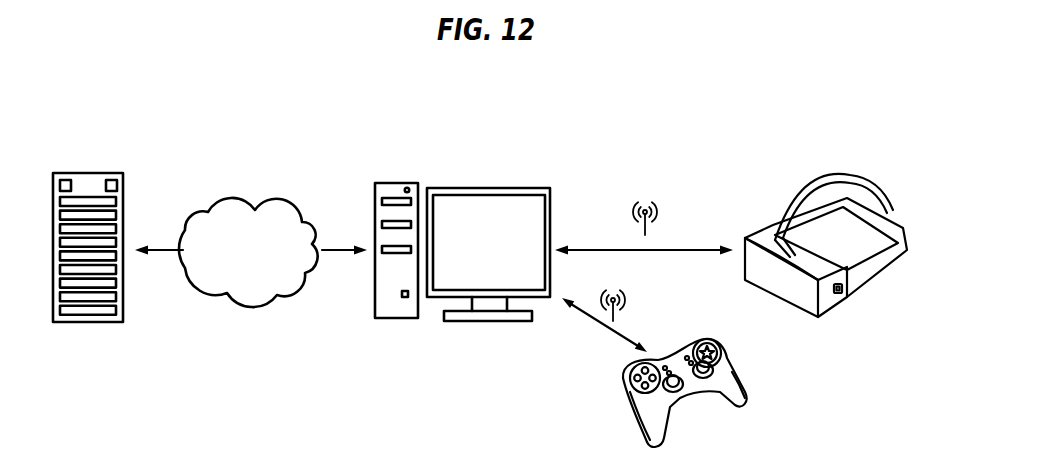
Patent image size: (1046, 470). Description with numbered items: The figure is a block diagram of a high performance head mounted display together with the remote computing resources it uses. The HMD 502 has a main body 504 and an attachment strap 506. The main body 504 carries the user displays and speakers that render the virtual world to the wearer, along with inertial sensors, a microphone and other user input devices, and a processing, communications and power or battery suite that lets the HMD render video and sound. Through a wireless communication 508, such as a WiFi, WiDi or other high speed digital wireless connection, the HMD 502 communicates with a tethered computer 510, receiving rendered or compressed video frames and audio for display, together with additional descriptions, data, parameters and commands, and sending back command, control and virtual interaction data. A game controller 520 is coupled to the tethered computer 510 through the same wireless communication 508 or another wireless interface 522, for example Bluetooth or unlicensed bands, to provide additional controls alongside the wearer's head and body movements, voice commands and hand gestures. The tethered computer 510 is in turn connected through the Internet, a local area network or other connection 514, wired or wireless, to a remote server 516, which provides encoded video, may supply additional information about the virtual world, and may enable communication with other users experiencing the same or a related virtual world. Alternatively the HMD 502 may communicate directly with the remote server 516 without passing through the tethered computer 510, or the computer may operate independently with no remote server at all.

The HMD 502 is at (843, 271).
The main body 504 is at (767, 287).
The attachment strap 506 is at (883, 205).
The wireless communication 508 is at (697, 248).
The tethered computer 510 is at (520, 170).
The connection 514 is at (243, 197).
The remote server 516 is at (143, 186).
The game controller 520 is at (640, 406).
The wireless interface 522 is at (600, 323).